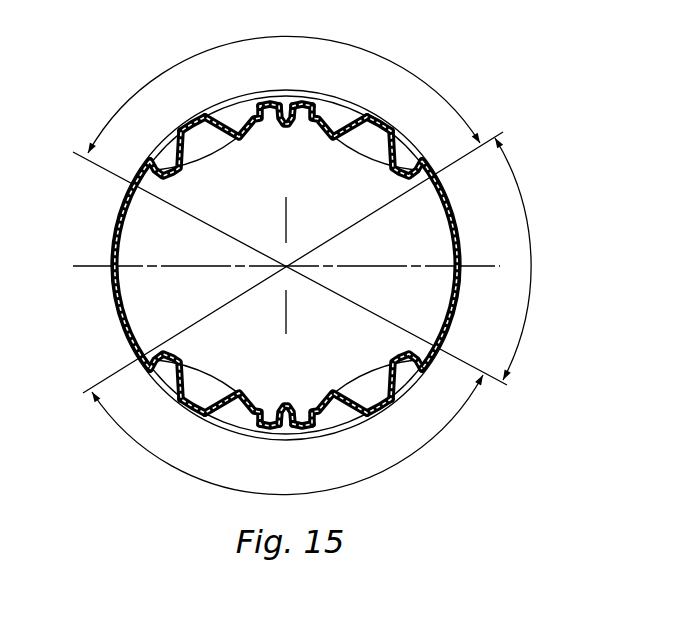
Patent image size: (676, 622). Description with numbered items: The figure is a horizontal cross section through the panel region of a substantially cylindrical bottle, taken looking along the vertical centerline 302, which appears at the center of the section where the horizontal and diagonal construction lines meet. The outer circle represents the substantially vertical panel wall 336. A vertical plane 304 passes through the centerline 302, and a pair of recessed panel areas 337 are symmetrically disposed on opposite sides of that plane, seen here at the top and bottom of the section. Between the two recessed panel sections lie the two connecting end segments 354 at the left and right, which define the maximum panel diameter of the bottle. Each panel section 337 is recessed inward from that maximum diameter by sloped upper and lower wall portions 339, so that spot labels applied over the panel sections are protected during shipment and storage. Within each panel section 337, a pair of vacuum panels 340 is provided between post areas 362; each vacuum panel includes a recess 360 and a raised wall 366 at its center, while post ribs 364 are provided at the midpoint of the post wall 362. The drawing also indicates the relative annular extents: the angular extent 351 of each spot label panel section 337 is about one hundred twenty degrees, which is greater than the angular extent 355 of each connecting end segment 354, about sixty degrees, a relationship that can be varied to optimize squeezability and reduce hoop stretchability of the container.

The vertical centerline 302 is at (291, 260).
The vertical plane 304 is at (97, 264).
The panel wall 336 is at (120, 326).
The recessed panel area 337 is at (183, 125).
The sloped upper and lower wall portions 339 is at (233, 100).
The vacuum panel 340 is at (226, 378).
The angular extent of the spot label panel section 351 is at (301, 36).
The connecting end segment 354 is at (113, 222).
The angular extent of the connecting end segments 355 is at (532, 249).
The recess 360 is at (335, 132).
The post area 362 is at (265, 107).
The post rib 364 is at (286, 106).
The raised wall 366 is at (388, 150).